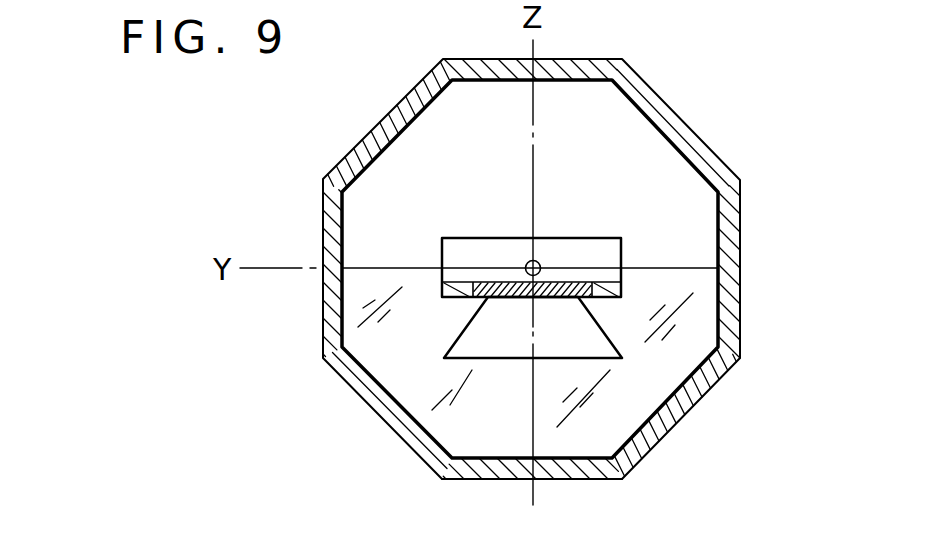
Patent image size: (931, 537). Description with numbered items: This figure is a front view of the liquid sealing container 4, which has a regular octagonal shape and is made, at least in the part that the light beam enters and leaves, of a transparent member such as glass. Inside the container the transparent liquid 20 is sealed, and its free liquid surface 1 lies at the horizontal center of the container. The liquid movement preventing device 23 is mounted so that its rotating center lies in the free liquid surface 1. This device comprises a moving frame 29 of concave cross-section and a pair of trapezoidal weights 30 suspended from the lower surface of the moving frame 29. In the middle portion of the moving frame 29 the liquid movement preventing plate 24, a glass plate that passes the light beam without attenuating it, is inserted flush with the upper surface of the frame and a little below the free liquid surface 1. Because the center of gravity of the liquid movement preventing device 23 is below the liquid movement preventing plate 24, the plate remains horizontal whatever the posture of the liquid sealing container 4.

The free liquid surface 1 is at (673, 268).
The liquid sealing container 4 is at (473, 481).
The transparent liquid 20 is at (590, 481).
The liquid movement preventing device 23 is at (591, 236).
The liquid movement preventing plate 24 is at (497, 281).
The moving frame 29 is at (482, 242).
The trapezoidal weights 30 is at (505, 345).